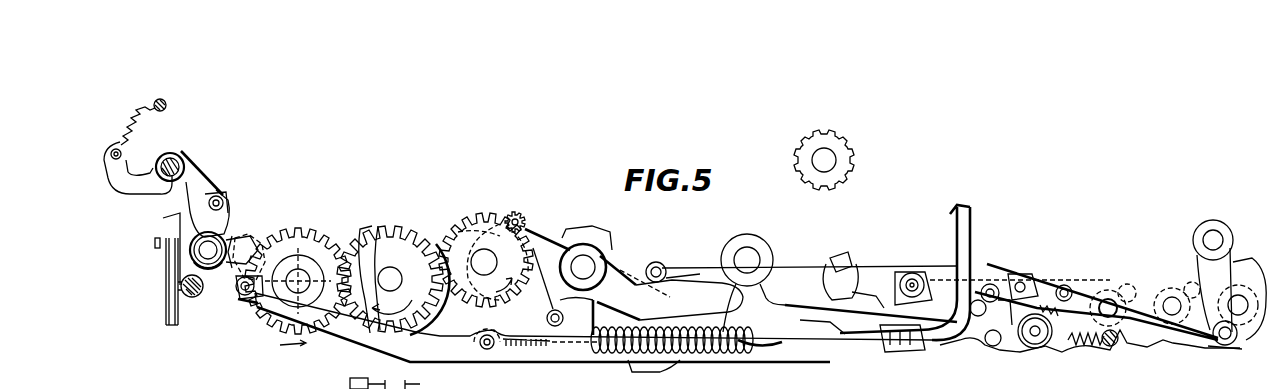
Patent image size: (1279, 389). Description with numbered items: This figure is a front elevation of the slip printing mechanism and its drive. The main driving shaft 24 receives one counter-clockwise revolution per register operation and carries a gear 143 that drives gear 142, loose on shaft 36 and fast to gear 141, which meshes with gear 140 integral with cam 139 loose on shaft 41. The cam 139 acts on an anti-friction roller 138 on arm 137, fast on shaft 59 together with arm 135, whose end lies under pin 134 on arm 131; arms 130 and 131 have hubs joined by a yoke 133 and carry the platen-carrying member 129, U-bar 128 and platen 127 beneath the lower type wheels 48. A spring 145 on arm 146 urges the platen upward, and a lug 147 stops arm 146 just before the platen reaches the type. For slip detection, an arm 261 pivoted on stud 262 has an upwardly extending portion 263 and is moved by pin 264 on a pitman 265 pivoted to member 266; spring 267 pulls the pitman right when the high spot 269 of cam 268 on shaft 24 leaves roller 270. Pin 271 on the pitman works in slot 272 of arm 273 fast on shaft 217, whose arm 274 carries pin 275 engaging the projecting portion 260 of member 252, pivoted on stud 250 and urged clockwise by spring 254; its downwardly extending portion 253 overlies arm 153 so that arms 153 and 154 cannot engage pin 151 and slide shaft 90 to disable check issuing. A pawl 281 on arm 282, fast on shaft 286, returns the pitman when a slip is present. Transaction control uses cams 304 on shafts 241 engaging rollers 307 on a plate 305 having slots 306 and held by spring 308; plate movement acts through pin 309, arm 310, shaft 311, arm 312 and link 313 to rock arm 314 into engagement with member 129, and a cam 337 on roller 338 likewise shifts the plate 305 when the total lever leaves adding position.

The main driving shaft 24 is at (304, 274).
The shaft 36 is at (396, 269).
The shaft 41 is at (486, 262).
The type wheels 48 is at (843, 172).
The shaft 59 is at (597, 264).
The shaft 90 is at (192, 298).
The platen 127 is at (842, 256).
The U-bar 128 is at (854, 266).
The platen-carrying member 129 is at (860, 292).
The arm 130 is at (673, 279).
The arm 131 is at (784, 290).
The yoke 133 is at (598, 234).
The pin 134 is at (659, 270).
The arm 135 is at (549, 314).
The arm 137 is at (549, 244).
The anti-friction roller 138 is at (524, 221).
The cam 139 is at (477, 227).
The gear 140 is at (485, 225).
The gear 141 is at (394, 266).
The gear 142 is at (365, 234).
The gear 143 is at (291, 246).
The spring 145 is at (706, 356).
The arm 146 is at (630, 309).
The lug 147 is at (636, 372).
The pin 151 is at (163, 285).
The arm 153 is at (170, 305).
The arm 154 is at (178, 319).
The shaft 217 is at (210, 262).
The shafts 241 is at (1109, 299).
The stud 250 is at (172, 158).
The member 252 is at (172, 186).
The downwardly extending portion 253 is at (163, 220).
The spring 254 is at (135, 122).
The projecting portion 260 is at (204, 182).
The arm 261 is at (832, 338).
The stud 262 is at (749, 252).
The upwardly extending portion 263 is at (975, 234).
The pin 264 is at (762, 352).
The pitman 265 is at (444, 350).
The member 266 is at (900, 352).
The spring 267 is at (538, 335).
The cam 268 is at (263, 314).
The high spot 269 is at (258, 310).
The roller 270 is at (252, 300).
The pin 271 is at (237, 237).
The slot 272 is at (253, 279).
The arm 273 is at (229, 226).
The arm 274 is at (233, 208).
The pin 275 is at (220, 197).
The pawl 281 is at (990, 283).
The arm 282 is at (1010, 300).
The shaft 286 is at (835, 312).
The cam 304 is at (1147, 284).
The plate 305 is at (1045, 287).
The slots 306 is at (1170, 296).
The anti-friction rollers 307 is at (1068, 285).
The spring 308 is at (1035, 350).
The pin 309 is at (1240, 266).
The arm 310 is at (1231, 246).
The shaft 311 is at (1205, 239).
The arm 312 is at (1237, 336).
The link 313 is at (1020, 273).
The arm 314 is at (906, 273).
The cam 337 is at (1218, 350).
The roller 338 is at (1184, 284).